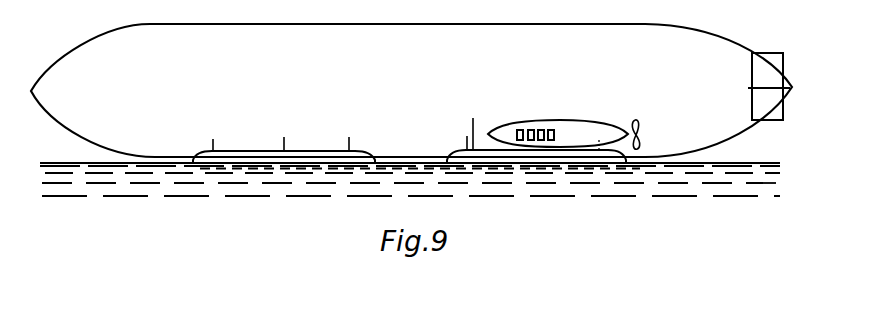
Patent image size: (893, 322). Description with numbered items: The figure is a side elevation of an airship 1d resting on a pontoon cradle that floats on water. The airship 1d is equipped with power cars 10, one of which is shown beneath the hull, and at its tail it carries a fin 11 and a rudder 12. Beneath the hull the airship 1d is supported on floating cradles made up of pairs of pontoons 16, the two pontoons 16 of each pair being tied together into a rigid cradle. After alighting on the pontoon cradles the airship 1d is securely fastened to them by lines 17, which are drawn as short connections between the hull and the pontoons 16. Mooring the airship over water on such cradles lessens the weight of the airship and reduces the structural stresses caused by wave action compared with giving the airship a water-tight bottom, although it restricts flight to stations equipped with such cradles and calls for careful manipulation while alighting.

The airship 1d is at (411, 90).
The power car 10 is at (556, 121).
The tail fin 11 is at (765, 52).
The rudder 12 is at (755, 90).
The pontoon 16 is at (313, 150).
The line 17 is at (213, 140).